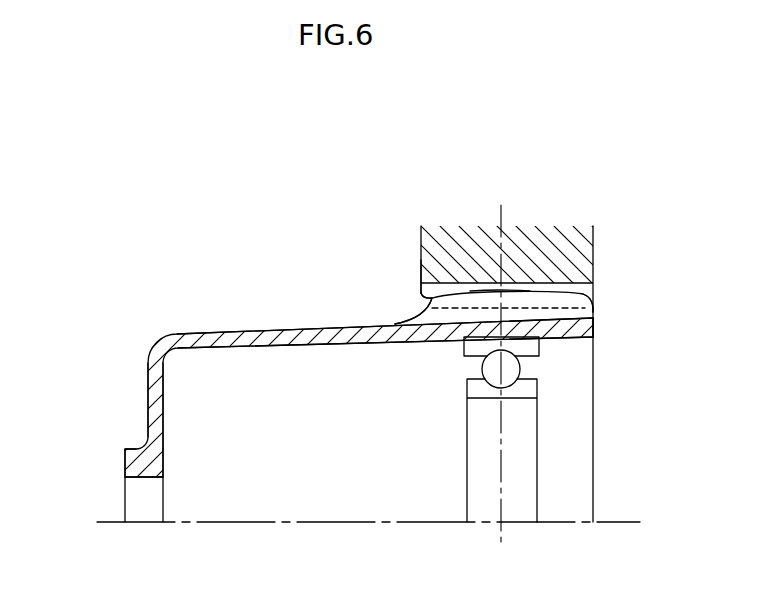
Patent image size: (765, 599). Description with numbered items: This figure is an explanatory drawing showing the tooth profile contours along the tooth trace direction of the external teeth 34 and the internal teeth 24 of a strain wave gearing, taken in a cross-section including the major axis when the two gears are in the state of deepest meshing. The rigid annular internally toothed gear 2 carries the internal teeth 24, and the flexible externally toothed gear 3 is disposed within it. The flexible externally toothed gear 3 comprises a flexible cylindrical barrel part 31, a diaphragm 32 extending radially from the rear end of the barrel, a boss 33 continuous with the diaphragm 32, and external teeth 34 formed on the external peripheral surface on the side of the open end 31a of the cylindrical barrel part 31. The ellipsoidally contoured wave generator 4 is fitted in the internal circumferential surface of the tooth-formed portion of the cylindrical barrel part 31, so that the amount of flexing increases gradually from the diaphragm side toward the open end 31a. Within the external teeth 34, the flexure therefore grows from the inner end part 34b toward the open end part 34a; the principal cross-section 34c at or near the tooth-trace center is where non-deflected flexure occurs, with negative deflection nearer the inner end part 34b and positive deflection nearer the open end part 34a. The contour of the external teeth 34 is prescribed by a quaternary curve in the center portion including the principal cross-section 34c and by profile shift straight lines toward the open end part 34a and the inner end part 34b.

The rigid annular internally toothed gear 2 is at (605, 255).
The flexible externally toothed gear 3 is at (167, 303).
The wave generator 4 is at (547, 438).
The internal teeth 24 is at (408, 291).
The cylindrical barrel part 31 is at (293, 338).
The open end 31a is at (593, 320).
The diaphragm 32 is at (157, 402).
The boss 33 is at (127, 463).
The external teeth 34 is at (408, 307).
The open end part 34a is at (593, 286).
The inner end part 34b is at (430, 297).
The principal cross-section 34c is at (500, 285).